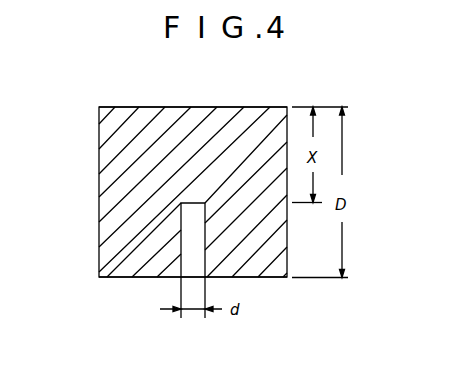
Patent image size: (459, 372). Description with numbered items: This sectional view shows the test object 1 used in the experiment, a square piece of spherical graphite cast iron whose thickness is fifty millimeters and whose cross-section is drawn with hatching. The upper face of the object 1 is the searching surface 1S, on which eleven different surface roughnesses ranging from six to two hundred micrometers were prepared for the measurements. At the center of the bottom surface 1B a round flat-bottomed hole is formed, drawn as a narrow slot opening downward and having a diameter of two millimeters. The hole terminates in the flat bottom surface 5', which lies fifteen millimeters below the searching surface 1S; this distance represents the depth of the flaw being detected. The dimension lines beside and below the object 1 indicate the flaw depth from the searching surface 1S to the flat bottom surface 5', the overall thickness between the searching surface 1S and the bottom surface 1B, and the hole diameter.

The object 1 is at (97, 182).
The searching surface 1S is at (145, 107).
The bottom surface 1B is at (145, 277).
The flat bottom surface of the hole 5' is at (118, 240).